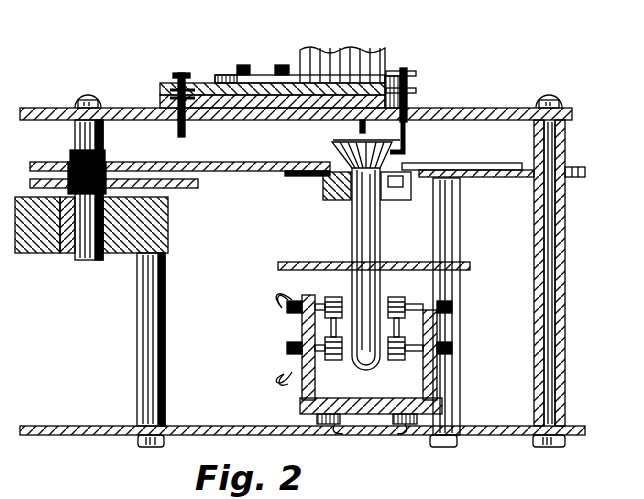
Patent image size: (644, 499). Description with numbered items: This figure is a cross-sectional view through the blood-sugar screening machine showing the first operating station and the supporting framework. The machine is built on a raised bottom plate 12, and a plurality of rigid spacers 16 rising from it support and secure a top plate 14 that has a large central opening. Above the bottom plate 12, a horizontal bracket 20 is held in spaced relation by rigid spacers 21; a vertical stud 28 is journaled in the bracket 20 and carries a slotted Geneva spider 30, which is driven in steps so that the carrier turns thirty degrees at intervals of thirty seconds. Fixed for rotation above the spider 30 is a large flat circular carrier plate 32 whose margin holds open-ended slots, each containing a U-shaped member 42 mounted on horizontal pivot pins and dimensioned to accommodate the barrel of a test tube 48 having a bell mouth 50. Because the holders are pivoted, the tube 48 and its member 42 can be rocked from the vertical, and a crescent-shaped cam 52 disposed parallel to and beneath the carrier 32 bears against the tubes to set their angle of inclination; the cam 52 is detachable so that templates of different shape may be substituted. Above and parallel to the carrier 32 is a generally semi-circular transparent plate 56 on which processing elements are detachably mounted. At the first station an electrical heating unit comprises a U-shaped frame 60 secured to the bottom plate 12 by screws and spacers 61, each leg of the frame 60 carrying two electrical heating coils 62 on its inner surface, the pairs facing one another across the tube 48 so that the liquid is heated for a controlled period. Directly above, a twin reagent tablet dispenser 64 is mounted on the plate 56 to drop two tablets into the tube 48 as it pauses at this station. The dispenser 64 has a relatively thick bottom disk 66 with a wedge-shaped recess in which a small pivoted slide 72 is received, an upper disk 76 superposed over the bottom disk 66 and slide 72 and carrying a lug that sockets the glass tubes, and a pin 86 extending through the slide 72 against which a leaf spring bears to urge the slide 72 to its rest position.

The bottom plate 12 is at (84, 436).
The top plate 14 is at (576, 170).
The rigid spacers 16 is at (565, 338).
The horizontal bracket 20 is at (168, 240).
The rigid spacers 21 is at (166, 306).
The vertical stud 28 is at (82, 254).
The Geneva spider 30 is at (189, 188).
The carrier plate 32 is at (282, 162).
The U-shaped member 42 is at (325, 195).
The test tube 48 is at (355, 226).
The bell mouth 50 is at (330, 154).
The cam 52 is at (298, 270).
The semi-circular plate 56 is at (524, 109).
The U-shaped frame 60 is at (302, 340).
The screws and spacers 61 is at (391, 432).
The electrical heating coils 62 is at (330, 303).
The twin reagent tablet dispenser 64 is at (404, 48).
The bottom disk 66 is at (165, 100).
The slide 72 is at (415, 92).
The upper disk 76 is at (200, 84).
The pin 86 is at (406, 135).